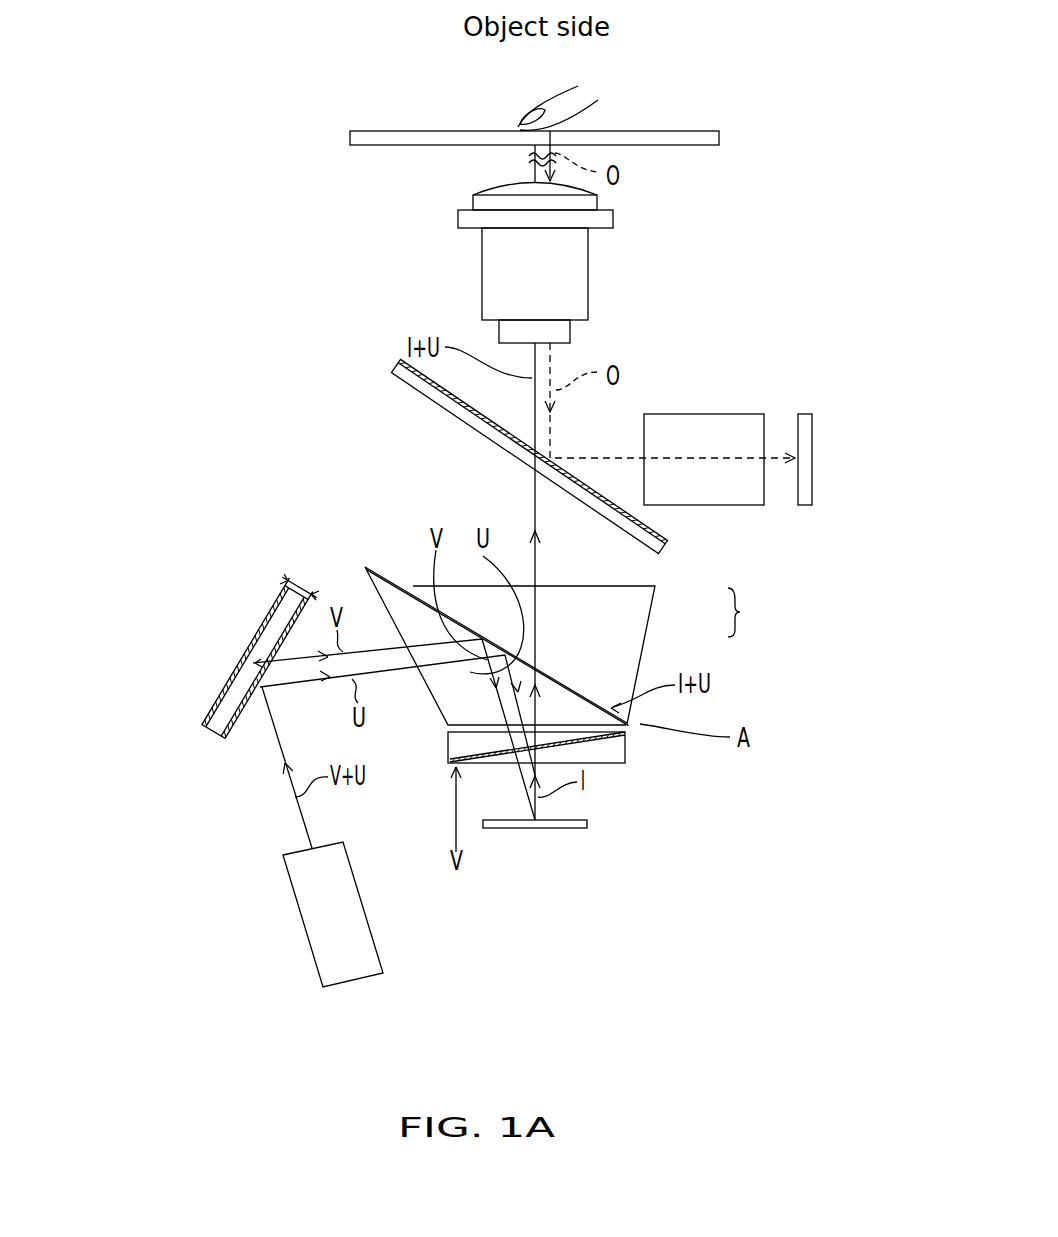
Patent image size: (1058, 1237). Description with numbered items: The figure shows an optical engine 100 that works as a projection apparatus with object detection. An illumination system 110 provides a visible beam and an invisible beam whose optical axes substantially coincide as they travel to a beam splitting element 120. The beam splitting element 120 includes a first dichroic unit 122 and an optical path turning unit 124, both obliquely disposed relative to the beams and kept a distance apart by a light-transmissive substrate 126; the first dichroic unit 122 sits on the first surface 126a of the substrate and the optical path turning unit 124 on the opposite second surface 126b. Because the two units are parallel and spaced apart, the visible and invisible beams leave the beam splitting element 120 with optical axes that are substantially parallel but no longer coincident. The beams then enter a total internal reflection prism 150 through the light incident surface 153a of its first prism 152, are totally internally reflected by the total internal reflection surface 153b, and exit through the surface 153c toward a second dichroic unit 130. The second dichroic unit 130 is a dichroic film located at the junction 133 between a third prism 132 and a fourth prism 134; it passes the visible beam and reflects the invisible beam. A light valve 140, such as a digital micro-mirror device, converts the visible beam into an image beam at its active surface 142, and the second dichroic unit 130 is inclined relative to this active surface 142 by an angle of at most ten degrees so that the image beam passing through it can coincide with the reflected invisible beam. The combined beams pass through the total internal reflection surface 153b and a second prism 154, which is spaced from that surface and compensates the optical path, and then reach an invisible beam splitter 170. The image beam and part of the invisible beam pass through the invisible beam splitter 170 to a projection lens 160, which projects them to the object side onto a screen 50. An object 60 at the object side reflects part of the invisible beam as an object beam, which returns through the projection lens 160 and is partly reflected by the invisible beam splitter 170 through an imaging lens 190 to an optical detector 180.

The screen 50 is at (723, 138).
The object 60 is at (562, 97).
The projection lens 160 is at (578, 275).
The invisible beam splitter 170 is at (389, 364).
The imaging lens 190 is at (705, 414).
The optical detector 180 is at (812, 488).
The total internal reflection prism 150 is at (549, 617).
The second prism 154 is at (643, 608).
The first prism 152 is at (548, 688).
The light incident surface 153a is at (380, 595).
The total internal reflection surface 153b is at (627, 724).
The surface of the first prism 153c is at (472, 736).
The second dichroic unit 130 is at (553, 839).
The third prism 132 is at (450, 765).
The junction 133 is at (520, 782).
The fourth prism 134 is at (603, 760).
The light valve 140 is at (578, 854).
The active surface 142 is at (573, 819).
The beam splitting element 120 is at (206, 721).
The first dichroic unit 122 is at (225, 740).
The optical path turning unit 124 is at (200, 723).
The light-transmissive substrate 126 is at (218, 739).
The first surface 126a is at (247, 718).
The second surface 126b is at (233, 677).
The illumination system 110 is at (337, 973).
The optical engine 100 is at (772, 911).